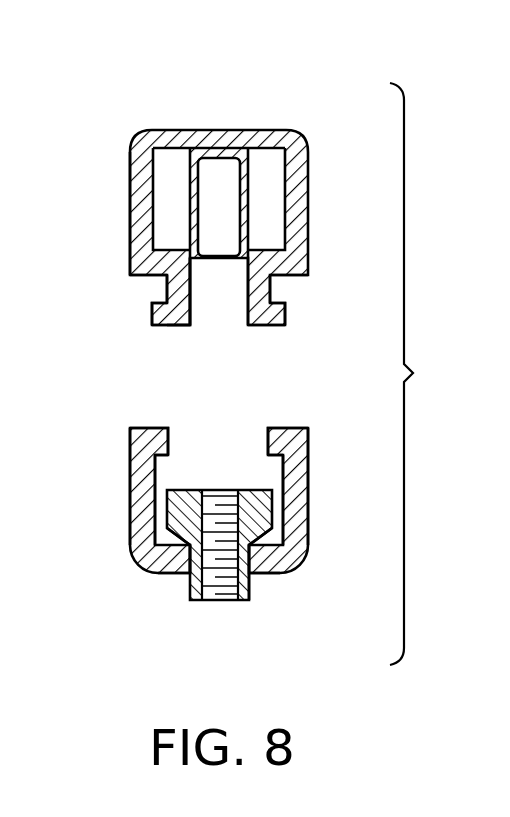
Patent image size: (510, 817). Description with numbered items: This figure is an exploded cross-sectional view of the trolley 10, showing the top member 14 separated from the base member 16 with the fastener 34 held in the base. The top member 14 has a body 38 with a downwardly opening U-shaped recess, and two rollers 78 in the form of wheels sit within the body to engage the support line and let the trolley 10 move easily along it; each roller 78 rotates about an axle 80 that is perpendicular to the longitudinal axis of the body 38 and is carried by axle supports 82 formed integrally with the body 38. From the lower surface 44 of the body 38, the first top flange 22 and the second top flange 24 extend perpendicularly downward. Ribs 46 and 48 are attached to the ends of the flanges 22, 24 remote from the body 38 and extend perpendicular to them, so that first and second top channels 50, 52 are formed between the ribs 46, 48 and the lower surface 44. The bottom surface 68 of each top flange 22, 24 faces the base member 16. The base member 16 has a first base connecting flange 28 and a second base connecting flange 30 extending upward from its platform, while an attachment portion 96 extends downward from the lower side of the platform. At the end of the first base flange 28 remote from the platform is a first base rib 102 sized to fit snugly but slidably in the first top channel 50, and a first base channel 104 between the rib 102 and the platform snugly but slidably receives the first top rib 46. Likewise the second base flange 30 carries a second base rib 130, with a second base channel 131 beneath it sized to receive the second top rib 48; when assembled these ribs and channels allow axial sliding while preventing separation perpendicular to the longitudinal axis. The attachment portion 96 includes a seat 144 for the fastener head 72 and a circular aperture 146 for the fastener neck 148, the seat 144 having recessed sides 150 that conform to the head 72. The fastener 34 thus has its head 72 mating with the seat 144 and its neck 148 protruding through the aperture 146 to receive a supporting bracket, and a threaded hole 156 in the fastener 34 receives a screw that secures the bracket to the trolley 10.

The trolley 10 is at (341, 110).
The top member 14 is at (127, 137).
The base member 16 is at (127, 533).
The first top flange 22 is at (247, 315).
The second top flange 24 is at (192, 312).
The first base connecting flange 28 is at (310, 486).
The second base connecting flange 30 is at (128, 458).
The fastener 34 is at (182, 575).
The top member body 38 is at (128, 192).
The lower surface 44 is at (148, 277).
The first top rib 46 is at (284, 314).
The second top rib 48 is at (152, 311).
The first top channel 50 is at (282, 279).
The second top channel 52 is at (166, 294).
The bottom surface 68 is at (163, 327).
The fastener head 72 is at (155, 486).
The rollers 78 is at (219, 167).
The axle 80 is at (250, 190).
The axle supports 82 is at (170, 162).
The attachment portion 96 is at (313, 543).
The first base rib 102 is at (267, 437).
The first base channel 104 is at (282, 465).
The second base rib 130 is at (170, 435).
The second base channel 131 is at (160, 463).
The seat 144 is at (272, 575).
The aperture 146 is at (263, 583).
The fastener neck 148 is at (264, 606).
The recessed sides 150 is at (153, 557).
The threaded hole 156 is at (217, 600).